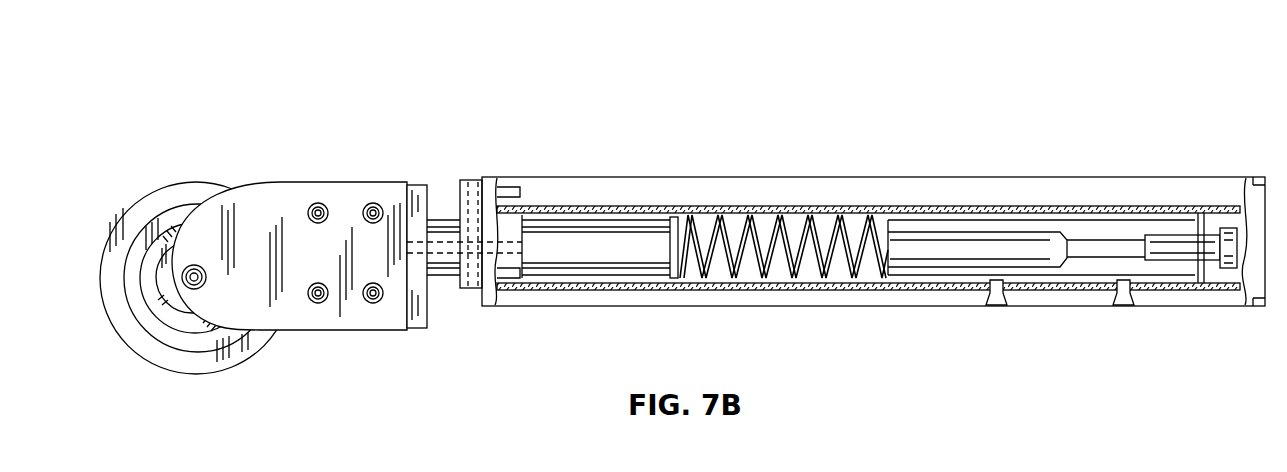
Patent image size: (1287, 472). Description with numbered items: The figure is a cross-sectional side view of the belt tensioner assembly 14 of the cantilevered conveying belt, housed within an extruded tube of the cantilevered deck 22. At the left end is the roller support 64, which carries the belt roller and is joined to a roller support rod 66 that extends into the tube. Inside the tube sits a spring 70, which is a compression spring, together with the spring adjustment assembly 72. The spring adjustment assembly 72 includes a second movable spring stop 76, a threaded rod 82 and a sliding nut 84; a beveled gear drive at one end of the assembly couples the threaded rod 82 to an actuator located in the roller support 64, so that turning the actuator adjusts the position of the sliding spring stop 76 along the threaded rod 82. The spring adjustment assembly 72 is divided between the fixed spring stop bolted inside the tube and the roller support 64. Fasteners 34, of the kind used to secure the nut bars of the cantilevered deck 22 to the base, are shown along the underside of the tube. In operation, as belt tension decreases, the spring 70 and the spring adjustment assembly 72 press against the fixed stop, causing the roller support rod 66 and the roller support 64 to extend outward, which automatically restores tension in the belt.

The belt tensioner assembly 14 is at (432, 73).
The roller support 64 is at (290, 115).
The spring adjustment assembly 72 is at (823, 108).
The cantilevered deck 22 is at (1130, 178).
The roller support rod 66 is at (558, 225).
The second movable spring stop 76 is at (638, 243).
The spring 70 is at (817, 212).
The threaded rod 82 is at (1075, 245).
The sliding nut 84 is at (1237, 230).
The fasteners 34 is at (1123, 305).